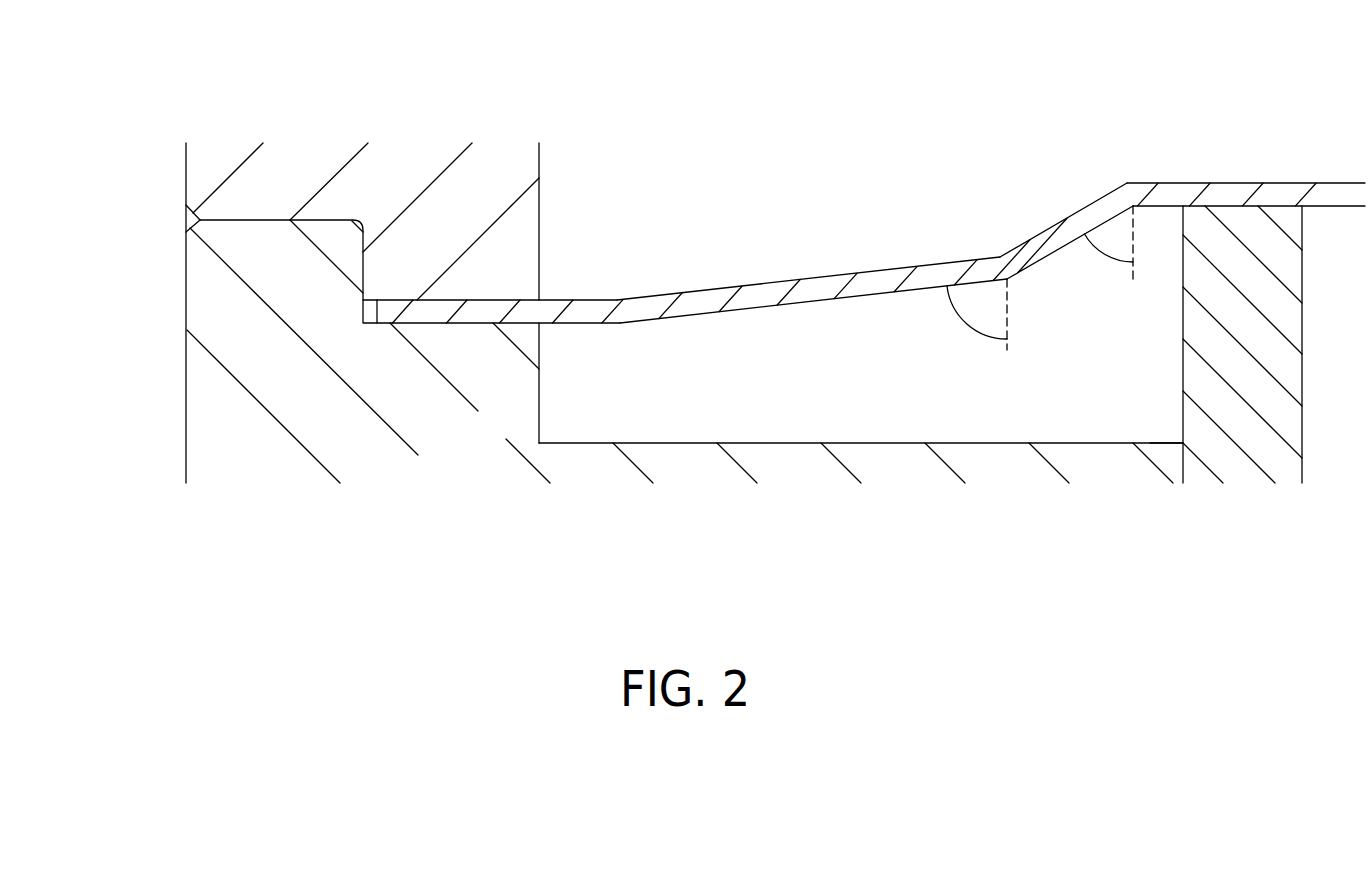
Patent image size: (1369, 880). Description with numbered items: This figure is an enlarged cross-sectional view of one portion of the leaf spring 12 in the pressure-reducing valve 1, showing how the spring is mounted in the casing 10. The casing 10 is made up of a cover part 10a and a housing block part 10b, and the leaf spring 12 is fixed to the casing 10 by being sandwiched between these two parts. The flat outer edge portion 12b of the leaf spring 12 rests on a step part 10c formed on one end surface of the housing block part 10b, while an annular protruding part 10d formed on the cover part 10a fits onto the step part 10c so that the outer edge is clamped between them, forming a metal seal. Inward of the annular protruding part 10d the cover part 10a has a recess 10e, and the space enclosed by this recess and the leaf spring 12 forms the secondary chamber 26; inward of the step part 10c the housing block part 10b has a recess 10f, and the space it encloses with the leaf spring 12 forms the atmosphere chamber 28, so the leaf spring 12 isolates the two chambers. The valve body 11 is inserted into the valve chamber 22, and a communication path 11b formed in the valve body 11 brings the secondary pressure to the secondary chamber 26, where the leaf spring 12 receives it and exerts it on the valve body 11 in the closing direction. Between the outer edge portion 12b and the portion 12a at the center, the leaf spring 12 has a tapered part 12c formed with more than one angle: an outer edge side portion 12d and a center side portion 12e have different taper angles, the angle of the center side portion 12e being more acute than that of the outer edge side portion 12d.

The pressure-reducing valve 1 is at (252, 84).
The casing 10 is at (98, 168).
The cover part 10a is at (202, 197).
The housing block part 10b is at (203, 262).
The step part 10c is at (458, 412).
The annular protruding part 10d is at (455, 232).
The recess 10e is at (540, 178).
The recess 10f is at (541, 372).
The valve body 11 is at (1206, 399).
The communication path 11b is at (1302, 306).
The leaf spring 12 is at (1288, 191).
The flange portion 12a is at (1222, 192).
The outer edge portion 12b is at (485, 318).
The tapered part 12c is at (1020, 163).
The outer edge side portion 12d is at (901, 265).
The center side portion 12e is at (1048, 252).
The valve chamber 22 is at (1185, 477).
The secondary chamber 26 is at (774, 215).
The atmosphere chamber 28 is at (1048, 395).